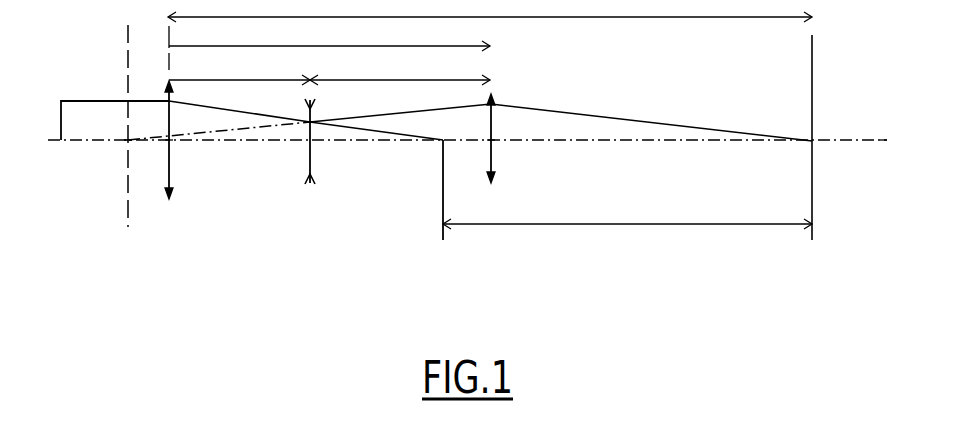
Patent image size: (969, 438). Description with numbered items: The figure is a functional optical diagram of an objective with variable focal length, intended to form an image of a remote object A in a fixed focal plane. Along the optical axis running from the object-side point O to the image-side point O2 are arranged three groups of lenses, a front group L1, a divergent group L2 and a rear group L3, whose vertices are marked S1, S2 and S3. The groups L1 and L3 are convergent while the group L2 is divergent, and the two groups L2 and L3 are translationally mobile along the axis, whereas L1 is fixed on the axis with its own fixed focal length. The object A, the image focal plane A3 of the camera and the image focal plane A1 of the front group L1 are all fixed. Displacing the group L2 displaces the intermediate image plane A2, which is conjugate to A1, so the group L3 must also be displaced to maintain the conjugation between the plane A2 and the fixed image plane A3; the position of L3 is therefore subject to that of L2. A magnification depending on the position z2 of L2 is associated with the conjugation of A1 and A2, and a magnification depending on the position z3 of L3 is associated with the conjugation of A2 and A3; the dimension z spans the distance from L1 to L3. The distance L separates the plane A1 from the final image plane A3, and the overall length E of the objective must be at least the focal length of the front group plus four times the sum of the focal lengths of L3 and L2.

The object A is at (61, 120).
The image focal plane of the front group A1 is at (440, 184).
The intermediate image plane A2 is at (121, 128).
The image focal plane of the camera A3 is at (809, 137).
The vertex of the first lens group S1 is at (177, 149).
The vertex of the second lens group S2 is at (318, 140).
The vertex of the third lens group S3 is at (499, 149).
The front lens group L1 is at (163, 151).
The second lens group L2 is at (310, 156).
The third lens group L3 is at (492, 153).
The object-side point of the optical axis O is at (119, 155).
The image-side point of the optical axis O2 is at (878, 156).
The overall length E is at (490, 11).
The axial distance from first to third group z is at (329, 41).
The position of the second group z2 is at (239, 75).
The position of the third group z3 is at (400, 75).
The distance from intermediate image to final image L is at (627, 217).